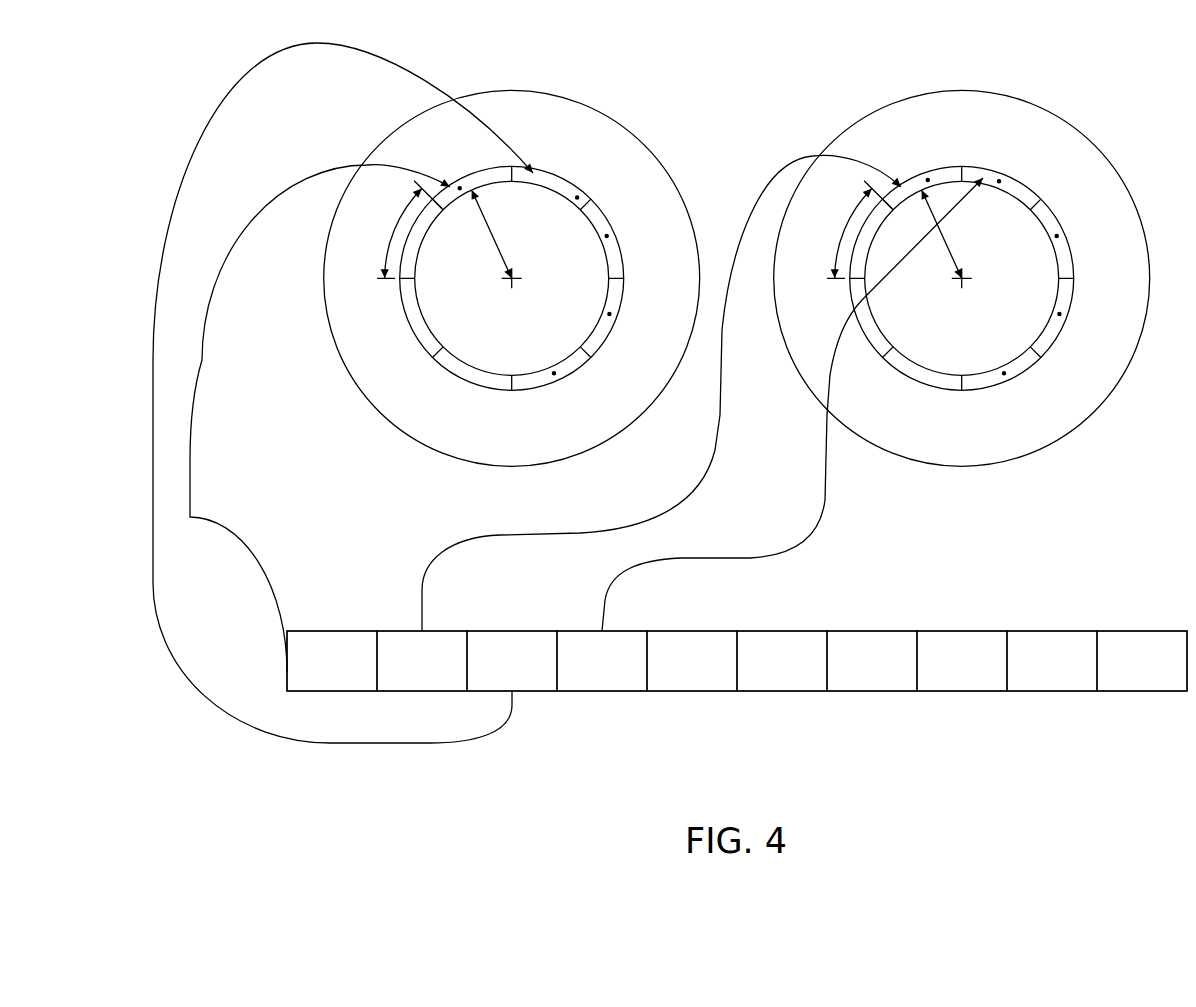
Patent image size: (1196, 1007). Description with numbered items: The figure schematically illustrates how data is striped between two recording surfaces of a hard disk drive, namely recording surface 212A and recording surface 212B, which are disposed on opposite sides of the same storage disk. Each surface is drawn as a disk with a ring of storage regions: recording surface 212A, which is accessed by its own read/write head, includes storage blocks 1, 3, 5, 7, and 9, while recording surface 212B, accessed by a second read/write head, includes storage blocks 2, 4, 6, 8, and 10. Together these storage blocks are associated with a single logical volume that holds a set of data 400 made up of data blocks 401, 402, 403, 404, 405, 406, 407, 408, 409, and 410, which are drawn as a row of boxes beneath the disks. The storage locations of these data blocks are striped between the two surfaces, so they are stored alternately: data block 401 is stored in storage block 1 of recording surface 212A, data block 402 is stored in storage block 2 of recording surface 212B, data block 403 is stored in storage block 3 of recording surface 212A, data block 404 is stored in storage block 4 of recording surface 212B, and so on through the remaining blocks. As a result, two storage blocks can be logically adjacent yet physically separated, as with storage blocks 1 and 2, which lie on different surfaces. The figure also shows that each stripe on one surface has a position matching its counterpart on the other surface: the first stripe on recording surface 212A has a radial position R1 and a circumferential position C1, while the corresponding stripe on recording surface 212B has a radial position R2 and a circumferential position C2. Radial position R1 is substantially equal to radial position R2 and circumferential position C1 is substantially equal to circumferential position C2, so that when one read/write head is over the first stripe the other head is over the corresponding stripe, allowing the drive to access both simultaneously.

The recording surface 212A is at (535, 90).
The recording surface 212B is at (853, 122).
The storage block 1 is at (461, 192).
The storage block 3 is at (577, 199).
The storage block 5 is at (606, 237).
The storage block 7 is at (609, 313).
The storage block 9 is at (554, 372).
The storage block 2 is at (928, 178).
The storage block 4 is at (999, 179).
The storage block 6 is at (1056, 236).
The storage block 8 is at (1059, 313).
The storage block 10 is at (1004, 372).
The radial position R1 is at (496, 245).
The radial position R2 is at (946, 245).
The circumferential position C1 is at (392, 232).
The circumferential position C2 is at (842, 232).
The set of data 400 is at (500, 765).
The data block 401 is at (311, 678).
The data block 402 is at (401, 678).
The data block 403 is at (491, 678).
The data block 404 is at (581, 678).
The data block 405 is at (671, 678).
The data block 406 is at (761, 678).
The data block 407 is at (851, 678).
The data block 408 is at (941, 678).
The data block 409 is at (1031, 678).
The data block 410 is at (1121, 678).